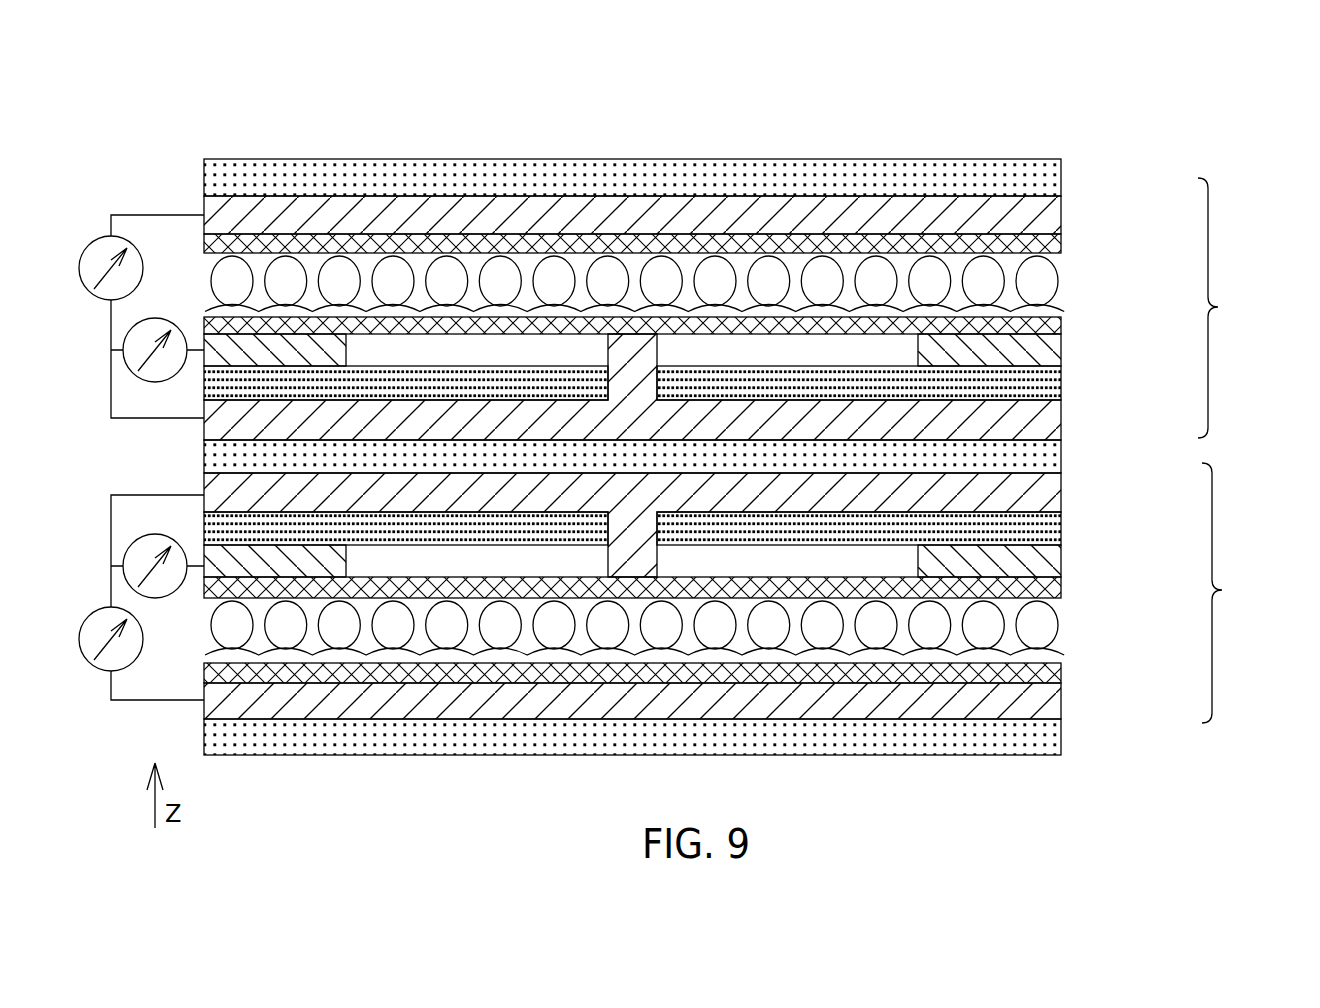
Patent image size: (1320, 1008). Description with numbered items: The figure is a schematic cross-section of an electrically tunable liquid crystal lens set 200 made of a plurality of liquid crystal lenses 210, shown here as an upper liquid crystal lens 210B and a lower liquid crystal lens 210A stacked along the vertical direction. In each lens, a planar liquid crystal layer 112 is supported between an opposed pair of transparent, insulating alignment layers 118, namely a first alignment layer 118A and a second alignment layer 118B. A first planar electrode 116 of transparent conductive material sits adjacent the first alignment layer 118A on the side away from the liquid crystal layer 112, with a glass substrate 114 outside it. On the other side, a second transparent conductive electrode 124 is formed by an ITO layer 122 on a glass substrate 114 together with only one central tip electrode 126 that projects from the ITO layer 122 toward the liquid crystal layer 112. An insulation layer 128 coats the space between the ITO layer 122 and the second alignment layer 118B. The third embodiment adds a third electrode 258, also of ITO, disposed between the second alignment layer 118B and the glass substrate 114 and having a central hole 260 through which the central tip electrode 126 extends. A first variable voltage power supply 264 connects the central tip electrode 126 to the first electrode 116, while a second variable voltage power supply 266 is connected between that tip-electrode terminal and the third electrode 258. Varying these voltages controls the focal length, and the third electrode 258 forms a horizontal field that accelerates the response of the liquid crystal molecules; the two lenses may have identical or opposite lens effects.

The electrically tunable liquid crystal lens set 200 is at (1033, 125).
The liquid crystal lens 210 is at (1243, 450).
The liquid crystal lens 210A is at (1245, 593).
The liquid crystal lens 210B is at (1243, 308).
The planar liquid crystal layer 112 is at (1059, 283).
The glass substrate 114 is at (775, 176).
The first planar electrode 116 is at (1042, 219).
The alignment layers 118 is at (703, 457).
The first alignment layer 118A is at (1042, 247).
The second alignment layer 118B is at (1042, 328).
The ITO layer 122 is at (666, 457).
The second transparent conductive electrode 124 is at (1042, 421).
The central tip electrode 126 is at (628, 372).
The insulation layer 128 is at (1042, 388).
The third electrode 258 is at (1042, 353).
The central hole 260 is at (915, 357).
The first variable voltage power supply 264 is at (93, 240).
The second variable voltage power supply 266 is at (177, 317).